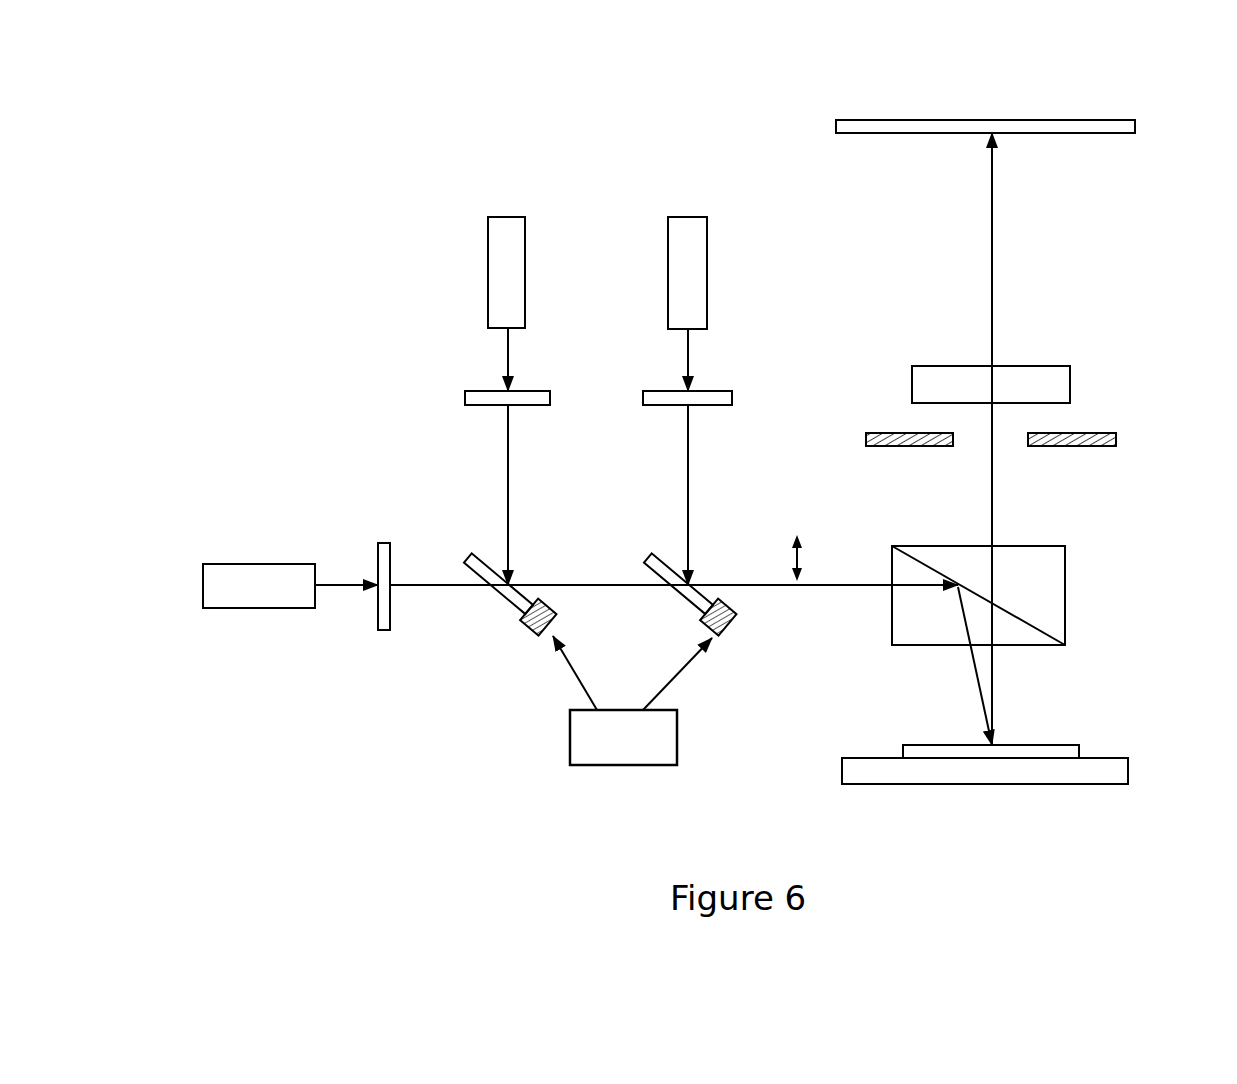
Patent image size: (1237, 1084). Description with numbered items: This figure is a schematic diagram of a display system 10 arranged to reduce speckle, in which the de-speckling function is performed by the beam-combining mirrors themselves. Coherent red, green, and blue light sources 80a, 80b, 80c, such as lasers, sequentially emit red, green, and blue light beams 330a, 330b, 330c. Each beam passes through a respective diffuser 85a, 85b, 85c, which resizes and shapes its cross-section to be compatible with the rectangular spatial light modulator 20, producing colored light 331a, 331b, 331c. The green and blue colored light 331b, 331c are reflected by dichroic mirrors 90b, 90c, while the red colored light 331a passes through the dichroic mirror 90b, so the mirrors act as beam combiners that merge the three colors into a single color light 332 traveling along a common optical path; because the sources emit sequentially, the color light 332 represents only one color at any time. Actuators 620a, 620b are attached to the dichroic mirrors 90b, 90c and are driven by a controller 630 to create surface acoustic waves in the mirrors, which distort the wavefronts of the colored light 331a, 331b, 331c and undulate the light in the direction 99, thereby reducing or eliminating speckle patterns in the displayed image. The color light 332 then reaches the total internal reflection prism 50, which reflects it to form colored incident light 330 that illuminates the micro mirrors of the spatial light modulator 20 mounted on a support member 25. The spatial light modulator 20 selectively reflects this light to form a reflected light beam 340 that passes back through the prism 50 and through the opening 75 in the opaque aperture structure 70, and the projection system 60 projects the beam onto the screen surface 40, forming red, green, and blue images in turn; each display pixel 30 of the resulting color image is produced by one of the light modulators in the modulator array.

The display system 10 is at (348, 168).
The red light source 80a is at (228, 578).
The green light source 80b is at (508, 262).
The blue light source 80c is at (692, 262).
The red light beam 330a is at (352, 580).
The green light beam 330b is at (506, 357).
The blue light beam 330c is at (686, 352).
The diffuser 85a is at (385, 620).
The diffuser 85b is at (490, 404).
The diffuser 85c is at (667, 400).
The colored light 331a is at (452, 590).
The colored light 331b is at (506, 470).
The colored light 331c is at (686, 468).
The dichroic mirror 90b is at (470, 568).
The dichroic mirror 90c is at (647, 563).
The actuator 620a is at (530, 642).
The actuator 620b is at (728, 638).
The controller 630 is at (662, 737).
The color light 332 is at (846, 590).
The direction 99 is at (817, 558).
The total internal reflection prism 50 is at (1050, 590).
The colored incident light 330 is at (980, 703).
The reflected light beam 340 is at (988, 525).
The projection system 60 is at (940, 385).
The aperture structure 70 is at (870, 433).
The opening 75 is at (1018, 458).
The screen surface 40 is at (1093, 125).
The display pixel 30 is at (996, 135).
The spatial light modulator 20 is at (1058, 742).
The support member 25 is at (1110, 770).